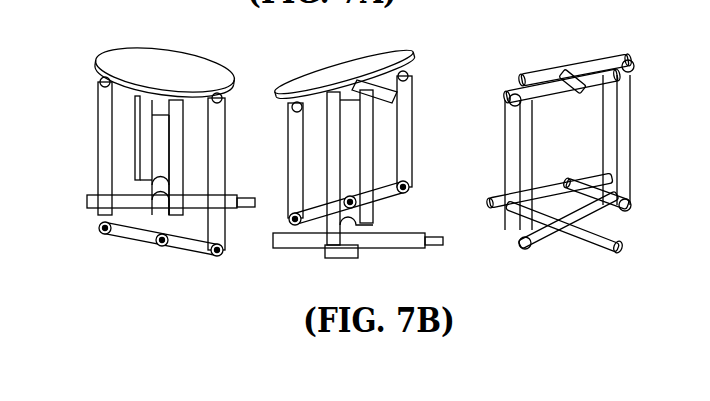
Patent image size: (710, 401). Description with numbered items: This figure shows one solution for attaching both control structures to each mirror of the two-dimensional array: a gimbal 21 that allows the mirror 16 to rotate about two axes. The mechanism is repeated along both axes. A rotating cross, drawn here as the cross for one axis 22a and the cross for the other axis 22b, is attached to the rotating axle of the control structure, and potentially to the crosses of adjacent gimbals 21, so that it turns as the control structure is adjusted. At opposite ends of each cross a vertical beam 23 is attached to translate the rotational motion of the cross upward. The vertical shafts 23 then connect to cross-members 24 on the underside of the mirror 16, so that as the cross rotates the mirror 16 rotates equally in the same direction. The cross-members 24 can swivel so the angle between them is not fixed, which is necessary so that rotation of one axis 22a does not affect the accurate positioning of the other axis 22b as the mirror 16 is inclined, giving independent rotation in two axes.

The mirror 16 is at (349, 66).
The gimbal 21 is at (586, 153).
The rotating cross (first axis) 22a is at (394, 253).
The rotating cross (second axis) 22b is at (128, 212).
The vertical beam 23 is at (415, 158).
The cross-member 24 is at (390, 95).